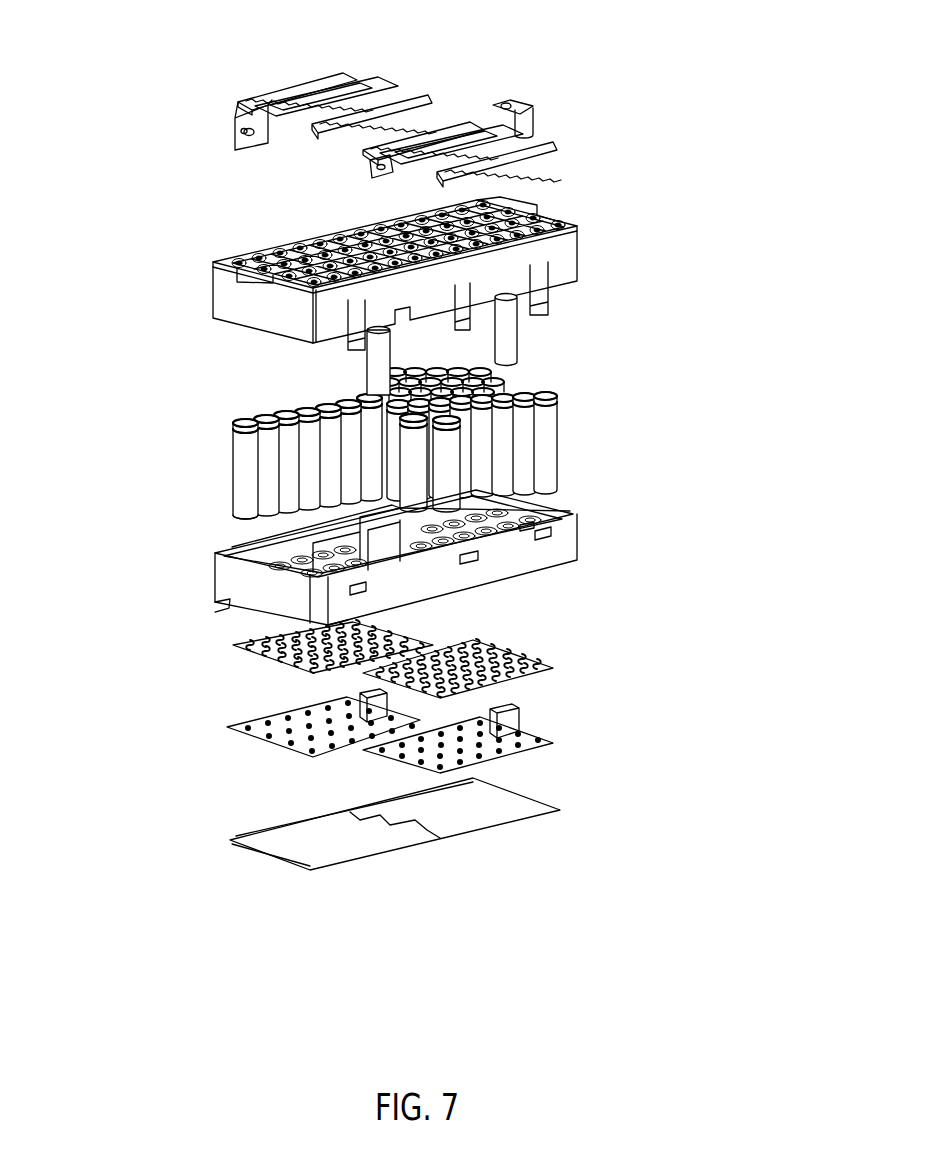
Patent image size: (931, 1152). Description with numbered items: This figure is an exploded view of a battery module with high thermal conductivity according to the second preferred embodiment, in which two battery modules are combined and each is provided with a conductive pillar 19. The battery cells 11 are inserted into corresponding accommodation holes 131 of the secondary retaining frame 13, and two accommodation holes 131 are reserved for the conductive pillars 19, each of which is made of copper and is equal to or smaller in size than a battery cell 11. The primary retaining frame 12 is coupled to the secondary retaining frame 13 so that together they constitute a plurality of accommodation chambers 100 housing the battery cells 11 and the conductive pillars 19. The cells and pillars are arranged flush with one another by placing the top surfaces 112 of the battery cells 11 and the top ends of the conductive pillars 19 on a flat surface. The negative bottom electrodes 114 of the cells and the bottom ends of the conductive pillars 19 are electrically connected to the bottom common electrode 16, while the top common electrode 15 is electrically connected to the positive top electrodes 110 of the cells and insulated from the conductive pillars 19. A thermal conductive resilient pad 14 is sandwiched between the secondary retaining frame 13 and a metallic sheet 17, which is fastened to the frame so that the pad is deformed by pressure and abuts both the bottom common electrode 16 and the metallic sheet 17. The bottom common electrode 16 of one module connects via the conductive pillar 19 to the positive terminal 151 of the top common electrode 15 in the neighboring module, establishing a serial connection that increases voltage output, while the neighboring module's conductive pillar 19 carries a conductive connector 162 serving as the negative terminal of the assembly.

The accommodation chamber 100 is at (576, 514).
The battery cell 11 is at (175, 471).
The positive top electrode 110 is at (179, 459).
The top surface 112 is at (233, 428).
The negative bottom electrode 114 is at (233, 530).
The primary retaining frame 12 is at (215, 202).
The secondary retaining frame 13 is at (226, 598).
The accommodation hole 131 is at (518, 523).
The thermal conductive resilient pad 14 is at (250, 741).
The top common electrode 15 is at (330, 74).
The positive terminal 151 is at (240, 106).
The bottom common electrode 16 is at (272, 651).
The conductive connector 162 is at (527, 101).
The metallic sheet 17 is at (561, 803).
The conductive pillar 19 is at (372, 384).